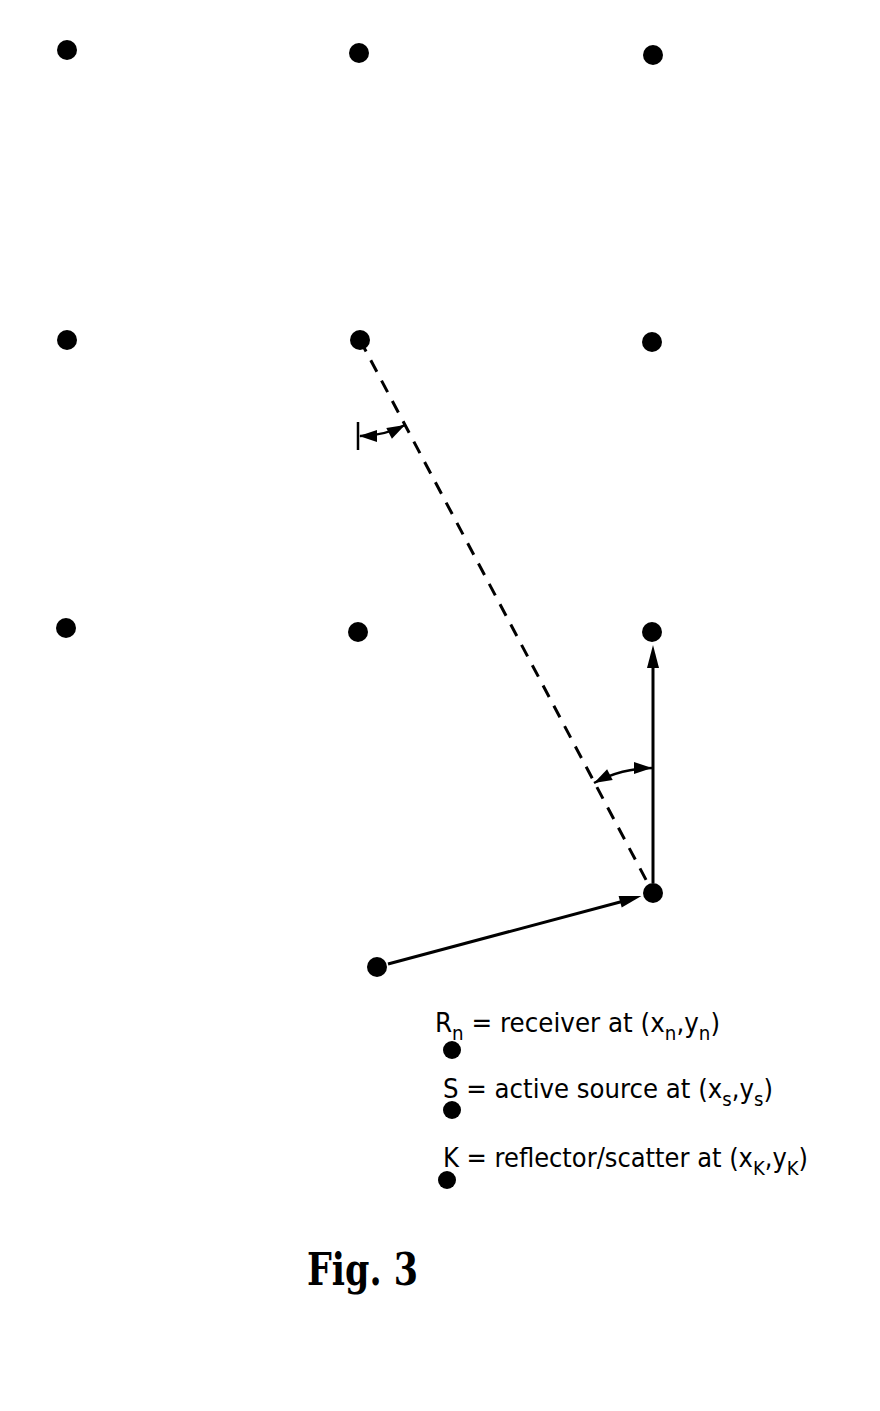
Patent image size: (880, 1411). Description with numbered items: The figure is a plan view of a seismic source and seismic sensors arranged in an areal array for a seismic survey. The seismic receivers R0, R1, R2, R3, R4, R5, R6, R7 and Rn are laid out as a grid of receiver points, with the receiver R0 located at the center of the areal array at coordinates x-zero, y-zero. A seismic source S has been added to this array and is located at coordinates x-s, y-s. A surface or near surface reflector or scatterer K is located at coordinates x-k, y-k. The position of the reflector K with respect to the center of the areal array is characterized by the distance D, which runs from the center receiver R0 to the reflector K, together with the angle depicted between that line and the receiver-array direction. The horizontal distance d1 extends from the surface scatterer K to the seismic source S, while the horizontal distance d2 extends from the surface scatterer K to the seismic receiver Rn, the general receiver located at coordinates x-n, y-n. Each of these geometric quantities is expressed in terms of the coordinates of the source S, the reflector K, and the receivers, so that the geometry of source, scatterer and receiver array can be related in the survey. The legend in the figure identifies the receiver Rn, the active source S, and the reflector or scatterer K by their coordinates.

The seismic receiver R1 is at (63, 40).
The seismic receiver R2 is at (357, 45).
The seismic receiver R3 is at (647, 47).
The seismic receiver R4 is at (645, 333).
The seismic receiver R5 is at (63, 330).
The seismic receiver R6 is at (62, 620).
The seismic receiver R7 is at (352, 623).
The seismic receiver at the array center R0 is at (368, 337).
The seismic receiver Rn is at (647, 625).
The seismic source S is at (368, 972).
The surface or near surface reflector or scatterer K is at (664, 897).
The distance from array center to reflector D is at (490, 593).
The horizontal distance from scatterer to source d1 is at (447, 943).
The horizontal distance from scatterer to receiver d2 is at (653, 778).